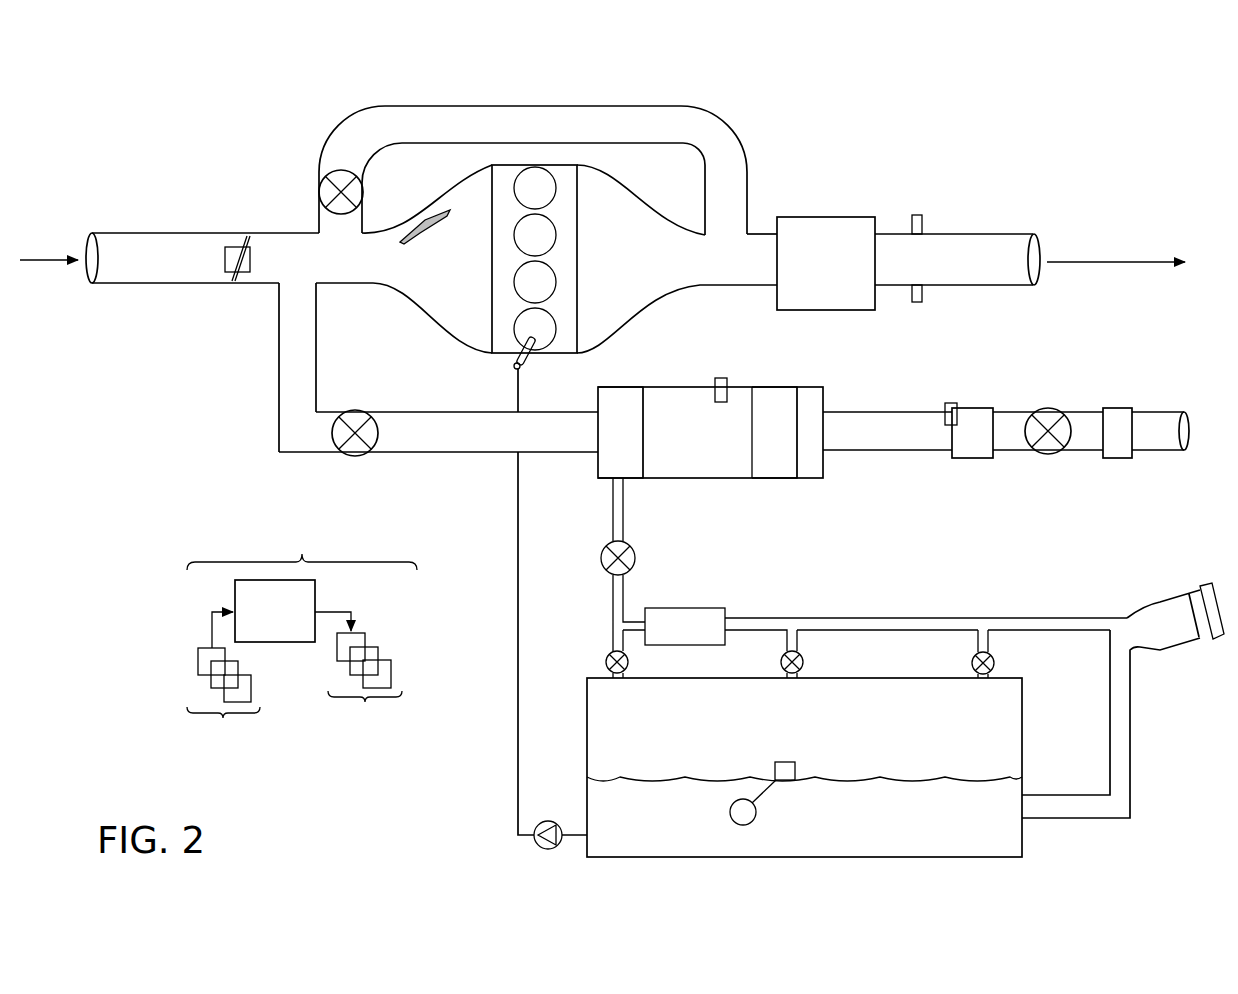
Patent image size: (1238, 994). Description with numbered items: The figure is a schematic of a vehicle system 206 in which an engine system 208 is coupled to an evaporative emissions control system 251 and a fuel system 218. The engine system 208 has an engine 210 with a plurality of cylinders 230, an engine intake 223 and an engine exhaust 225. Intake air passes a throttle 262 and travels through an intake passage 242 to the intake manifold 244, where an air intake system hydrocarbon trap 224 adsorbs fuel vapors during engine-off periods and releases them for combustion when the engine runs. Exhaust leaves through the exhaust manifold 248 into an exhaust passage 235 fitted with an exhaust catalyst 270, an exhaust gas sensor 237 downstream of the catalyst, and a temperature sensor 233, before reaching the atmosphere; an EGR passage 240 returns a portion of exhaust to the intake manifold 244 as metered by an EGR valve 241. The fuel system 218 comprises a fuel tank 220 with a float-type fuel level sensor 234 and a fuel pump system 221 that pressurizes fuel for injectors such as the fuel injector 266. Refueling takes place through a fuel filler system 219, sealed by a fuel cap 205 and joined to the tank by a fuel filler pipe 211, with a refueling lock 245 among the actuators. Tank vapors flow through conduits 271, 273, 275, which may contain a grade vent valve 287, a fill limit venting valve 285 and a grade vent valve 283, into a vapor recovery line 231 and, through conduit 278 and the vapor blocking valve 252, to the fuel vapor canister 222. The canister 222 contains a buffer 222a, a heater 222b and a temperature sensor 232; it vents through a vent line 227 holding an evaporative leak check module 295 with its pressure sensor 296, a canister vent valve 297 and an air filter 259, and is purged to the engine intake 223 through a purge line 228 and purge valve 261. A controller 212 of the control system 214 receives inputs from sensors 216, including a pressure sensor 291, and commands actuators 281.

The fuel cap 205 is at (1205, 585).
The vehicle system 206 is at (100, 168).
The engine system 208 is at (850, 165).
The engine 210 is at (578, 243).
The fuel filler pipe 211 is at (1130, 720).
The controller 212 is at (275, 611).
The control system 214 is at (302, 542).
The sensors 216 is at (223, 685).
The fuel system 218 is at (1142, 787).
The fuel filler system 219 is at (1178, 583).
The fuel tank 220 is at (1022, 775).
The fuel pump system 221 is at (548, 822).
The fuel vapor canister 222 is at (824, 405).
The buffer 222a is at (620, 388).
The heater 222b is at (775, 478).
The engine intake 223 is at (257, 167).
The air intake system hydrocarbon trap 224 is at (422, 217).
The engine exhaust 225 is at (790, 145).
The vent line 227 is at (1006, 431).
The purge line 228 is at (438, 432).
The cylinders 230 is at (552, 180).
The vapor recovery line 231 is at (1040, 618).
The temperature sensor 232 is at (718, 378).
The temperature sensor 233 is at (912, 291).
The fuel level sensor 234 is at (783, 762).
The exhaust passage 235 is at (995, 233).
The exhaust gas sensor 237 is at (912, 226).
The EGR passage 240 is at (533, 170).
The EGR valve 241 is at (318, 192).
The intake passage 242 is at (268, 287).
The intake manifold 244 is at (427, 259).
The refueling lock 245 is at (1205, 640).
The exhaust manifold 248 is at (677, 259).
The emissions control system 251 is at (1175, 368).
The vapor blocking valve 252 is at (610, 570).
The air filter 259 is at (1122, 408).
The purge valve 261 is at (352, 410).
The throttle 262 is at (250, 257).
The fuel injector 266 is at (525, 357).
The exhaust catalyst 270 is at (816, 218).
The conduit 271 is at (626, 640).
The conduit 273 is at (782, 640).
The conduit 275 is at (978, 640).
The conduit 278 is at (612, 510).
The actuators 281 is at (359, 677).
The grade vent valve 283 is at (992, 662).
The fill limit venting valve 285 is at (805, 662).
The grade vent valve 287 is at (605, 662).
The pressure sensor 291 is at (725, 615).
The evaporative leak check module 295 is at (973, 408).
The pressure sensor 296 is at (950, 404).
The canister vent valve 297 is at (1050, 410).